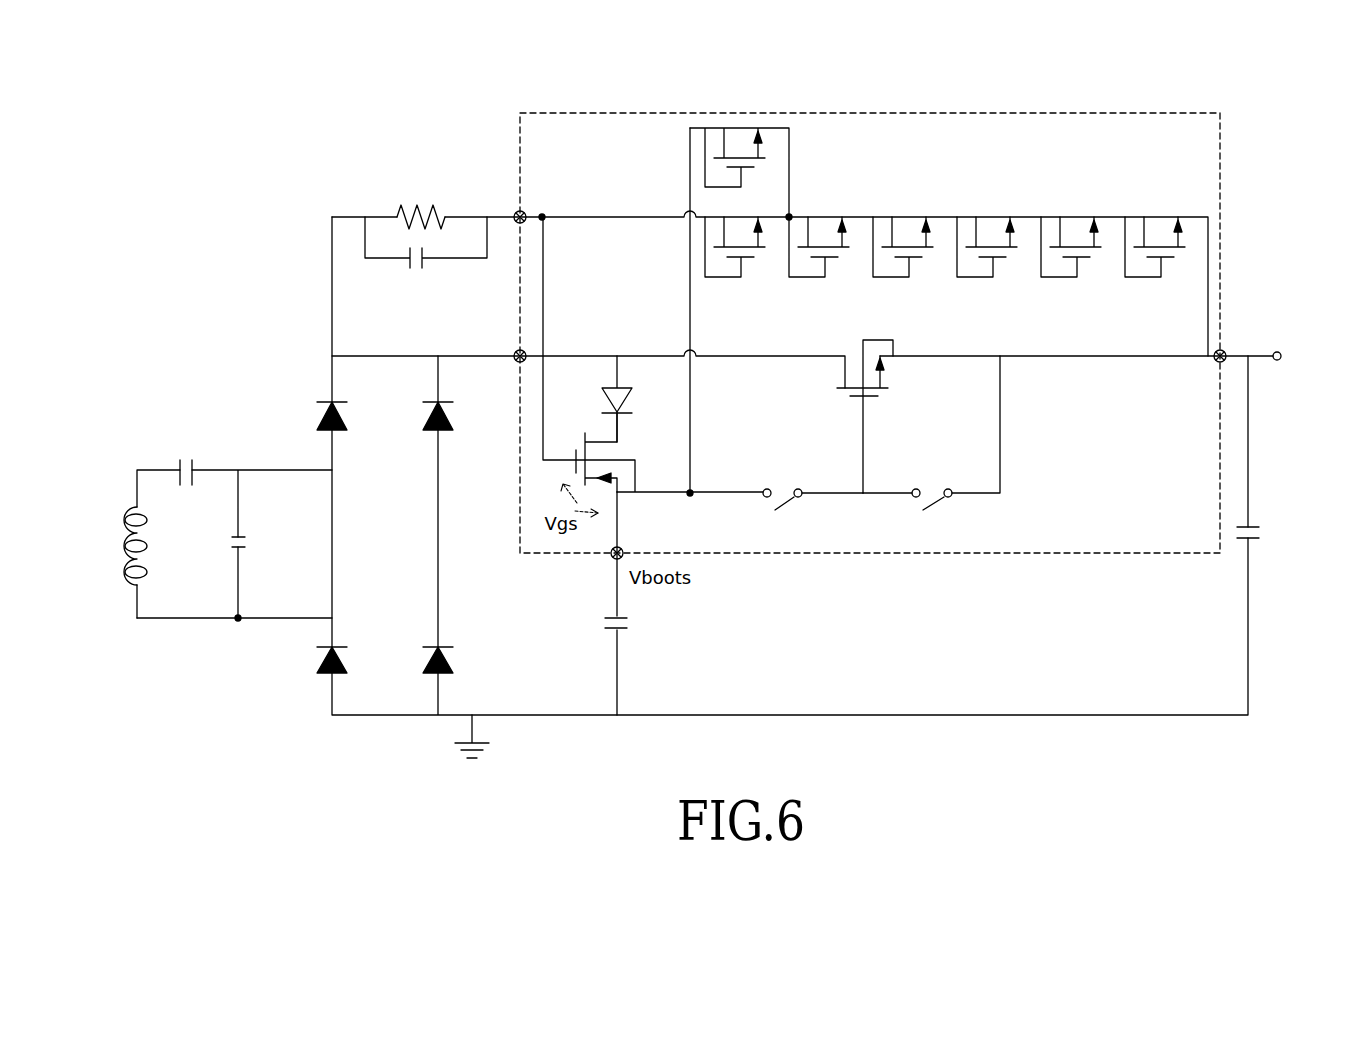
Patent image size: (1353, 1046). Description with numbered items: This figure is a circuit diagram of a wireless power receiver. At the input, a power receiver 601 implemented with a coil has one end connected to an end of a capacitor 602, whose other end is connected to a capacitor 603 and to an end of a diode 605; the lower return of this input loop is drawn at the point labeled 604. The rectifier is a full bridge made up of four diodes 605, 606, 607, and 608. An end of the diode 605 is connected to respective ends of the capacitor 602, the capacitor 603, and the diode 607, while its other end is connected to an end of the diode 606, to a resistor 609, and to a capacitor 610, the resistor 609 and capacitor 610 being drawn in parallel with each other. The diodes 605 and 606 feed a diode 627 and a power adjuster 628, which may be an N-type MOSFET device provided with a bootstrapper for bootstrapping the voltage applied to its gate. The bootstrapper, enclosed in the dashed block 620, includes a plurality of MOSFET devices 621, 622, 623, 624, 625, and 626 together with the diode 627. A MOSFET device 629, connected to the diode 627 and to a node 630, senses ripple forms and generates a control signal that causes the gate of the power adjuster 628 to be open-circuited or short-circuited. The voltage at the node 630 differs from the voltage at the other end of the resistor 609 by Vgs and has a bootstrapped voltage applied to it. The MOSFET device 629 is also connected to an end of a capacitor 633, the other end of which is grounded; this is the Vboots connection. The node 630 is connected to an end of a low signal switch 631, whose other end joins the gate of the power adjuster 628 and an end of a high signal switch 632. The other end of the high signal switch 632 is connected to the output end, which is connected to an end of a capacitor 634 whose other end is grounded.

The power receiver 601 is at (118, 551).
The capacitor 602 is at (183, 455).
The capacitor 603 is at (256, 543).
The node 604 is at (137, 622).
The diode 605 is at (349, 418).
The diode 606 is at (455, 418).
The diode 607 is at (349, 661).
The diode 608 is at (455, 661).
The resistor 609 is at (416, 198).
The capacitor 610 is at (418, 272).
The charge pump / switching circuit 620 is at (1222, 239).
The MOSFET device 621 is at (740, 279).
The MOSFET device 622 is at (824, 279).
The MOSFET device 623 is at (908, 279).
The MOSFET device 624 is at (992, 279).
The MOSFET device 625 is at (1076, 279).
The MOSFET device 626 is at (1160, 279).
The diode 627 is at (633, 395).
The power adjuster 628 is at (893, 382).
The MOSFET device 629 is at (577, 432).
The node 630 is at (690, 499).
The low signal switch 631 is at (779, 481).
The high signal switch 632 is at (927, 481).
The capacitor 633 is at (632, 623).
The capacitor 634 is at (1265, 531).